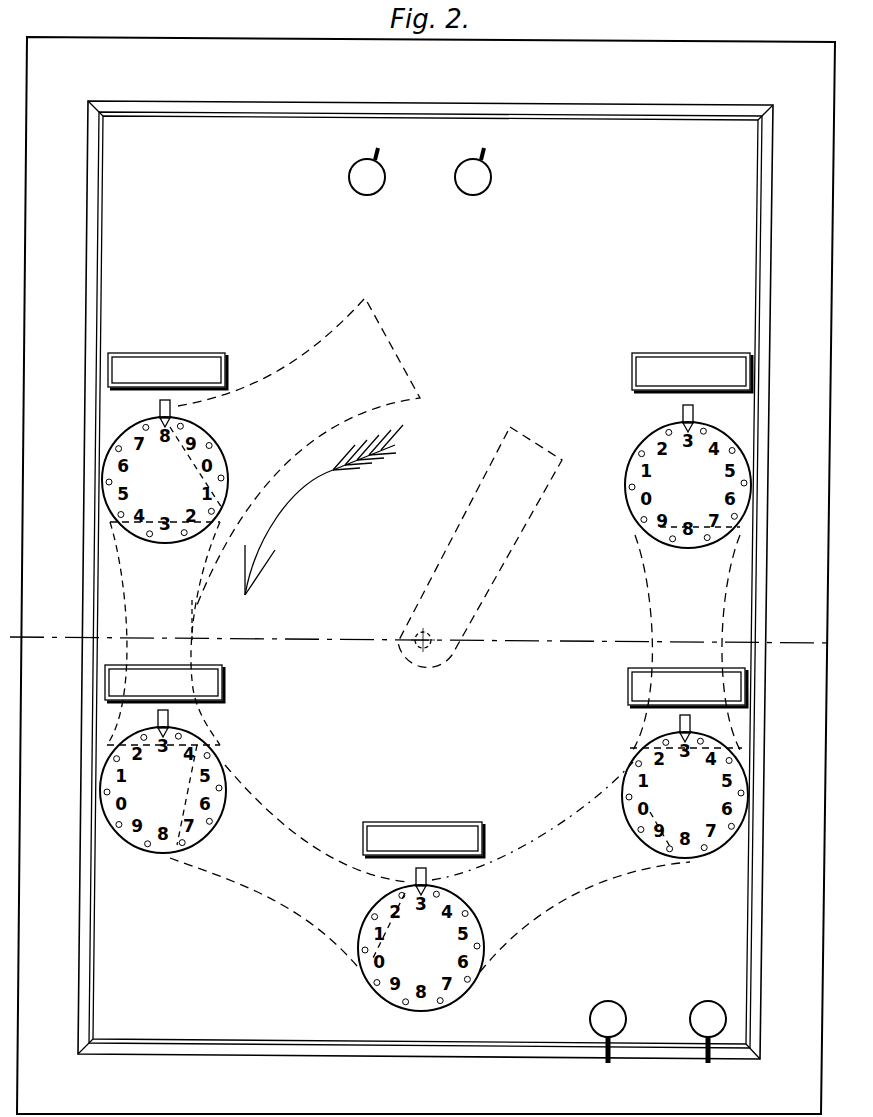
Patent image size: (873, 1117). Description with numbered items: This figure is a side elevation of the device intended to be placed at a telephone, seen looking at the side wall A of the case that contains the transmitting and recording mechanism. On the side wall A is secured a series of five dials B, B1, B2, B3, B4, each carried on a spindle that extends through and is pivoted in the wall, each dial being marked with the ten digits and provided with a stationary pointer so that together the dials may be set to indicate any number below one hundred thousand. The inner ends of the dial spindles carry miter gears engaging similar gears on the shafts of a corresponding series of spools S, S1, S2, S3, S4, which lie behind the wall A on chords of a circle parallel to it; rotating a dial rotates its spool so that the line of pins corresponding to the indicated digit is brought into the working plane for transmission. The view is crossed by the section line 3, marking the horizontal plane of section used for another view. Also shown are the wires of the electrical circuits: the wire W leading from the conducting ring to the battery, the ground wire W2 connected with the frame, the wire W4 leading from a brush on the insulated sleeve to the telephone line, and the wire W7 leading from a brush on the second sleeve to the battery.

The side wall A is at (425, 580).
The dial B is at (115, 478).
The dial B1 is at (108, 786).
The dial B2 is at (410, 990).
The dial B3 is at (718, 800).
The dial B4 is at (717, 465).
The wire W is at (710, 1066).
The ground wire W2 is at (489, 152).
The wire W4 is at (383, 152).
The wire W7 is at (610, 1066).
The spool S is at (287, 372).
The spool S1 is at (190, 612).
The spool S2 is at (290, 895).
The spool S3 is at (560, 890).
The spool S4 is at (705, 617).
The section line 3 is at (419, 644).